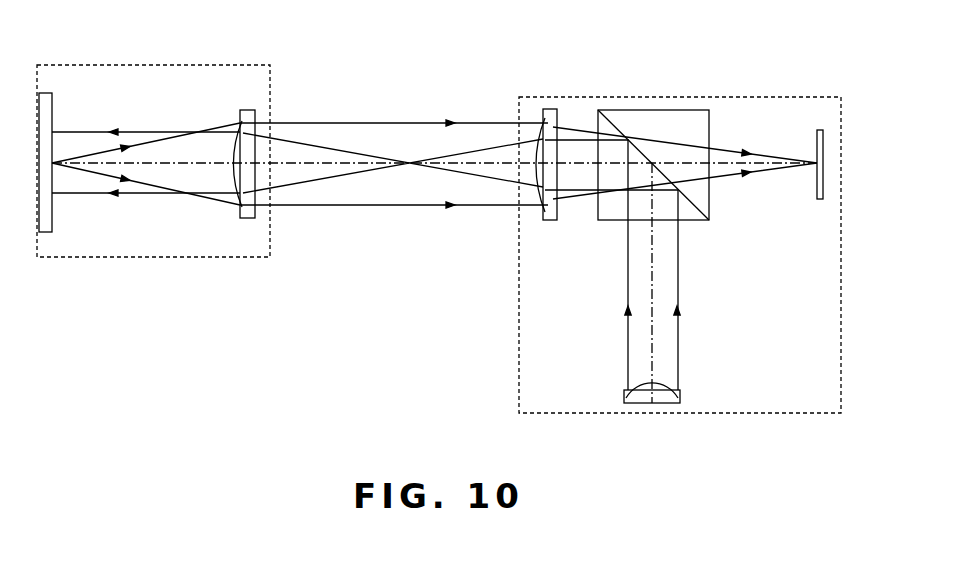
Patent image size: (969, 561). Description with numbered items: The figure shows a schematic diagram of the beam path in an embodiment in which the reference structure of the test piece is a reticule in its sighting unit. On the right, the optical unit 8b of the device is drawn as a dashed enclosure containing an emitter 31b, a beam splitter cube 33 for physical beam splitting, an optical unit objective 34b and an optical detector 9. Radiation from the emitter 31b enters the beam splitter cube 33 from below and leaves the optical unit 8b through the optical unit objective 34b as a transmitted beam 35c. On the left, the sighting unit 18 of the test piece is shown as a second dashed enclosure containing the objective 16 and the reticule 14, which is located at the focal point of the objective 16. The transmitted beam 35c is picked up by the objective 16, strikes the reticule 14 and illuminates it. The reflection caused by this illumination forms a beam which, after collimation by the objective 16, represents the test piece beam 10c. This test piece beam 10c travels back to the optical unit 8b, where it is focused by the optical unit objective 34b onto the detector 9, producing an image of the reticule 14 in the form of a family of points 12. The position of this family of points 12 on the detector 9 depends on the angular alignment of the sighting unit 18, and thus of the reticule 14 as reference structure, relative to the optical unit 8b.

The reticule 14 is at (47, 99).
The objective 16 is at (248, 113).
The sighting unit 18 is at (260, 272).
The transmitted beam 35c is at (293, 182).
The test piece beam 10c is at (449, 206).
The optical unit objective 34b is at (548, 120).
The beam splitter cube 33 is at (690, 122).
The family of points 12 is at (816, 163).
The optical detector 9 is at (822, 137).
The emitter 31b is at (668, 397).
The optical unit 8b is at (505, 387).